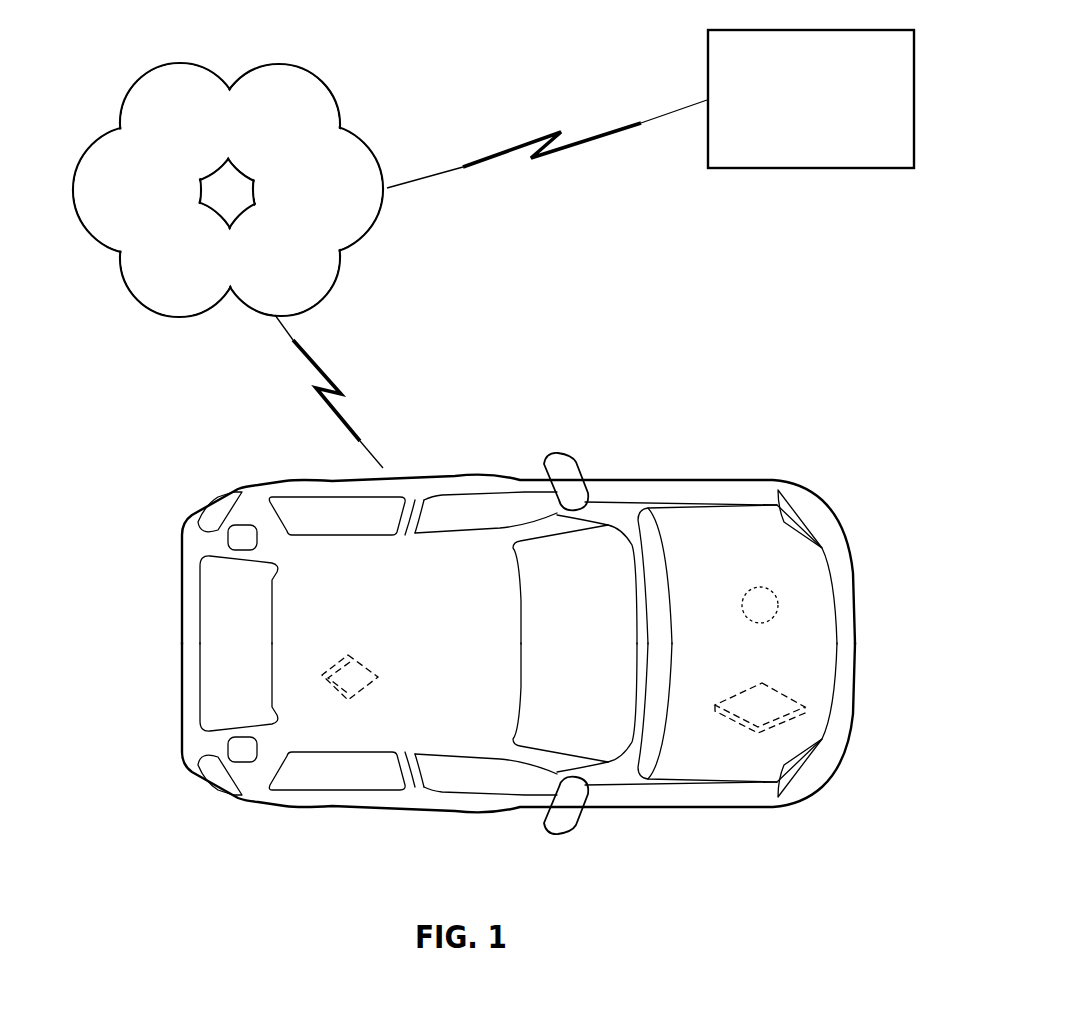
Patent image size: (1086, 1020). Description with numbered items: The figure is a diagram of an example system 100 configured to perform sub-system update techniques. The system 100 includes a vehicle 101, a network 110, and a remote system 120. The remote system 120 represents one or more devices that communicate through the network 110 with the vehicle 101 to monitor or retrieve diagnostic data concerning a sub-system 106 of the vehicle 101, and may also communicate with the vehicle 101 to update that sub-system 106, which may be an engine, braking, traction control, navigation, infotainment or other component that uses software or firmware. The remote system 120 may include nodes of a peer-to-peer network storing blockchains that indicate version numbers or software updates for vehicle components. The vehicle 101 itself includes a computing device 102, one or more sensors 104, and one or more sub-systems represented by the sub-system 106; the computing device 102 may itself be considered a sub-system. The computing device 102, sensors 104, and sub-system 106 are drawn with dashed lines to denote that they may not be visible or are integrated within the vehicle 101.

The system 100 is at (985, 97).
The vehicle 101 is at (638, 478).
The computing device 102 is at (737, 693).
The sensors 104 is at (760, 587).
The sub-system 106 is at (348, 655).
The network 110 is at (228, 190).
The remote system 120 is at (811, 99).